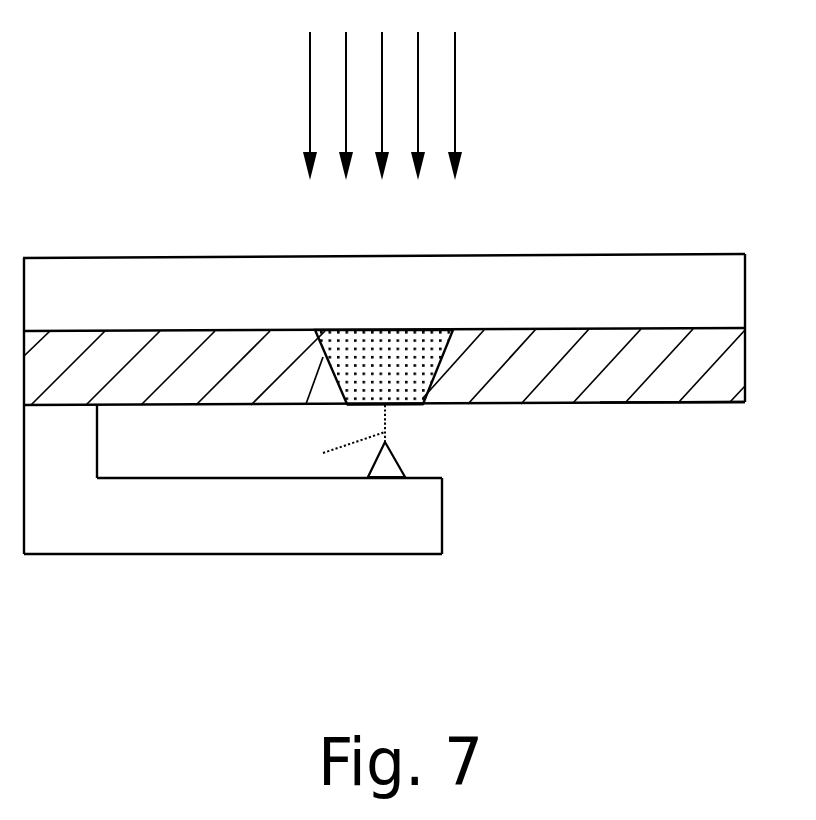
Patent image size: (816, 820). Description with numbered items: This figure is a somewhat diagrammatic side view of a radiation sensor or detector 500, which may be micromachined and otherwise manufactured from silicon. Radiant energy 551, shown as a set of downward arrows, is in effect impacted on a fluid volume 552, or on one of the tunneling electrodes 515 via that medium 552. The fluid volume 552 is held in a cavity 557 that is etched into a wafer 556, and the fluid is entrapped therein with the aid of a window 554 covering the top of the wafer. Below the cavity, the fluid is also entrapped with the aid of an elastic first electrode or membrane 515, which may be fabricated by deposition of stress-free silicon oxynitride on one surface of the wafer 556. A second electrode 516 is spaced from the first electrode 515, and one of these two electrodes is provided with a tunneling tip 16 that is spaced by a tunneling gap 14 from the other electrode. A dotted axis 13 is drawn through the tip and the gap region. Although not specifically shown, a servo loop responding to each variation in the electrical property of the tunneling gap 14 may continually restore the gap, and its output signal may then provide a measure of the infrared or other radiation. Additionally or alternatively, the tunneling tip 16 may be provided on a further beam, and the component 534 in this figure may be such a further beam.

The radiation detector 500 is at (115, 258).
The radiant energy 551 is at (373, 117).
The window 554 is at (443, 275).
The fluid volume 552 is at (403, 367).
The cavity 557 is at (323, 357).
The wafer 556 is at (703, 403).
The first electrode 515 is at (375, 406).
The probe axis 13 is at (333, 441).
The tunneling gap 14 is at (398, 423).
The tunneling tip 16 is at (392, 451).
The second electrode 516 is at (342, 478).
The component 534 is at (147, 554).